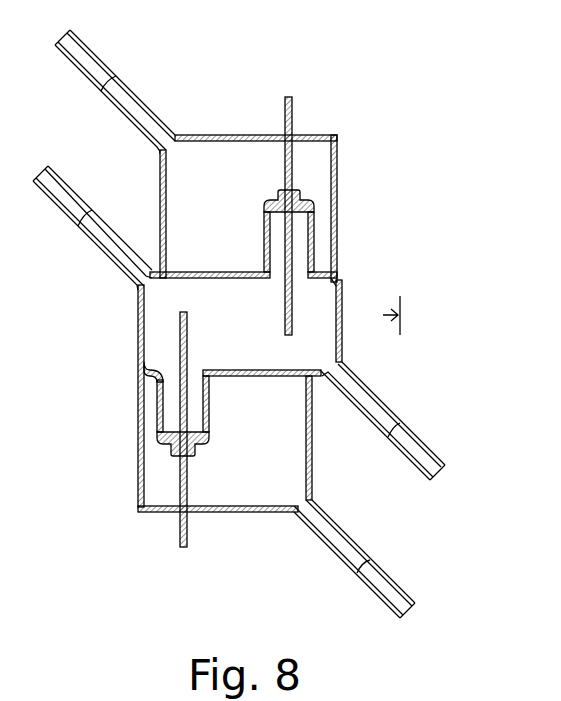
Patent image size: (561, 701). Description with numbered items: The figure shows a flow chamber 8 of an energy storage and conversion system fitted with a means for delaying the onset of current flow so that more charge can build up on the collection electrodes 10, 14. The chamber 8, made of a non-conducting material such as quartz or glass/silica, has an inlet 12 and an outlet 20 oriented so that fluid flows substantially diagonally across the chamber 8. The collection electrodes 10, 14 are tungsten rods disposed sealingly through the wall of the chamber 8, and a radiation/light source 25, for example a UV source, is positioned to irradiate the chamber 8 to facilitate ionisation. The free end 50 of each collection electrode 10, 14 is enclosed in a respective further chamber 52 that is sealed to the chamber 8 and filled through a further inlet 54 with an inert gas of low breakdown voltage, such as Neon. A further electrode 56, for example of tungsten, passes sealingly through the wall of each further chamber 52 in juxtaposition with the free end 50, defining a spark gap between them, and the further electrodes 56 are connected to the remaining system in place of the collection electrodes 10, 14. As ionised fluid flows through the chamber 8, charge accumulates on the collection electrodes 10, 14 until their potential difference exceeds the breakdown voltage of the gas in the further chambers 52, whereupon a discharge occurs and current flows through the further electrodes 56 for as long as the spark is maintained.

The flow chamber 8 is at (257, 320).
The collection electrode 10 is at (183, 355).
The inlet 12 is at (105, 217).
The collection electrode 14 is at (295, 300).
The outlet 20 is at (410, 440).
The radiation/light source 25 is at (402, 300).
The free end 50 is at (290, 148).
The further chamber 52 is at (213, 158).
The further inlet 54 is at (94, 54).
The further electrode 56 is at (237, 334).